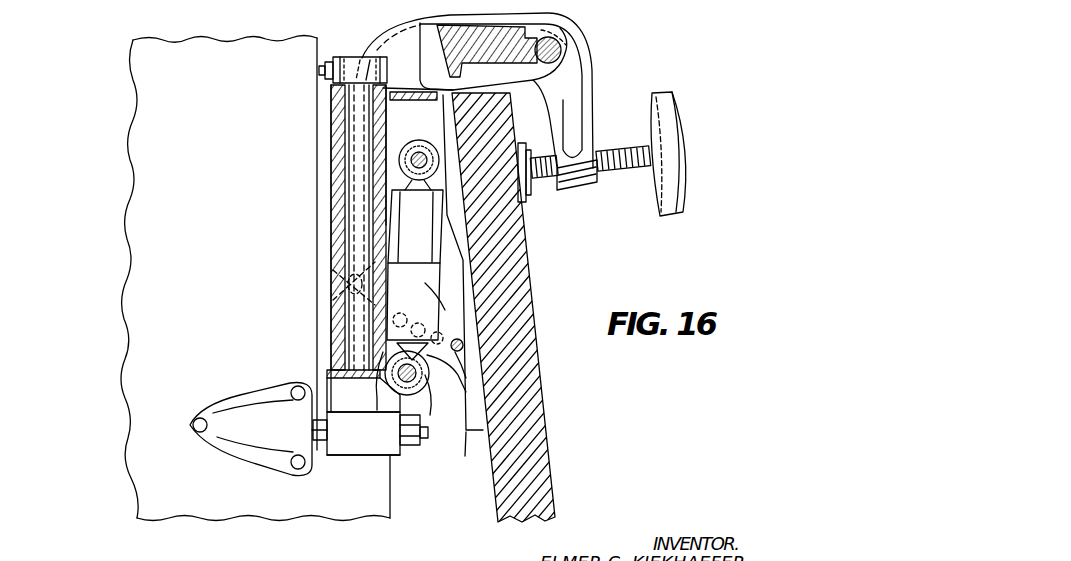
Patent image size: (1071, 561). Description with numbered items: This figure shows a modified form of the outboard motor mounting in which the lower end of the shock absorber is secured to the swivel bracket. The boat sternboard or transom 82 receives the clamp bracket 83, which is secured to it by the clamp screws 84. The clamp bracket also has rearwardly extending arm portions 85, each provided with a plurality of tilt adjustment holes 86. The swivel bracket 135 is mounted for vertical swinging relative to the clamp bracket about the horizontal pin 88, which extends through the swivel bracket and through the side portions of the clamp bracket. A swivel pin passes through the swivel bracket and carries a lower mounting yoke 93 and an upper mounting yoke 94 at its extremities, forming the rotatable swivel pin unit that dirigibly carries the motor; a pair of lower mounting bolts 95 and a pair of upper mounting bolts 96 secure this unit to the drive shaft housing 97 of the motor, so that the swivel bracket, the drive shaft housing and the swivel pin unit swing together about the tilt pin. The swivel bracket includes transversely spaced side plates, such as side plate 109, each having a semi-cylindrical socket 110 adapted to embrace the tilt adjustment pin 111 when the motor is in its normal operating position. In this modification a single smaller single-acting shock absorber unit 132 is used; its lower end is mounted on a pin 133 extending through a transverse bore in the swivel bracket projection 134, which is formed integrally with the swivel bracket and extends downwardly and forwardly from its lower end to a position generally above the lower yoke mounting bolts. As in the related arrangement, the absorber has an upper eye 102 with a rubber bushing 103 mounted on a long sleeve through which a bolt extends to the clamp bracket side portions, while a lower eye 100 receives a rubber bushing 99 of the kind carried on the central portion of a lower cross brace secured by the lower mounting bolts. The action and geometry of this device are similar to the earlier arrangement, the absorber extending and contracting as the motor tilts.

The boat sternboard or transom 82 is at (527, 322).
The clamp bracket 83 is at (583, 80).
The clamp screws 84 is at (637, 168).
The arm portions 85 is at (326, 333).
The tilt adjustment holes 86 is at (340, 285).
The horizontal pin 88 is at (562, 53).
The lower mounting yoke 93 is at (380, 449).
The upper mounting yoke 94 is at (358, 56).
The lower mounting bolts 95 is at (314, 430).
The upper mounting bolts 96 is at (320, 71).
The drive shaft housing 97 is at (132, 212).
The rubber bushing 99 is at (422, 405).
The lower eye 100 is at (377, 433).
The upper eye 102 is at (430, 143).
The rubber bushing 103 is at (420, 178).
The side plate 109 is at (453, 328).
The semi-cylindrical socket 110 is at (460, 357).
The tilt adjustment pin 111 is at (463, 346).
The single-acting shock absorber unit 132 is at (455, 259).
The pin 133 is at (390, 378).
The swivel bracket projection 134 is at (425, 384).
The swivel bracket 135 is at (513, 33).